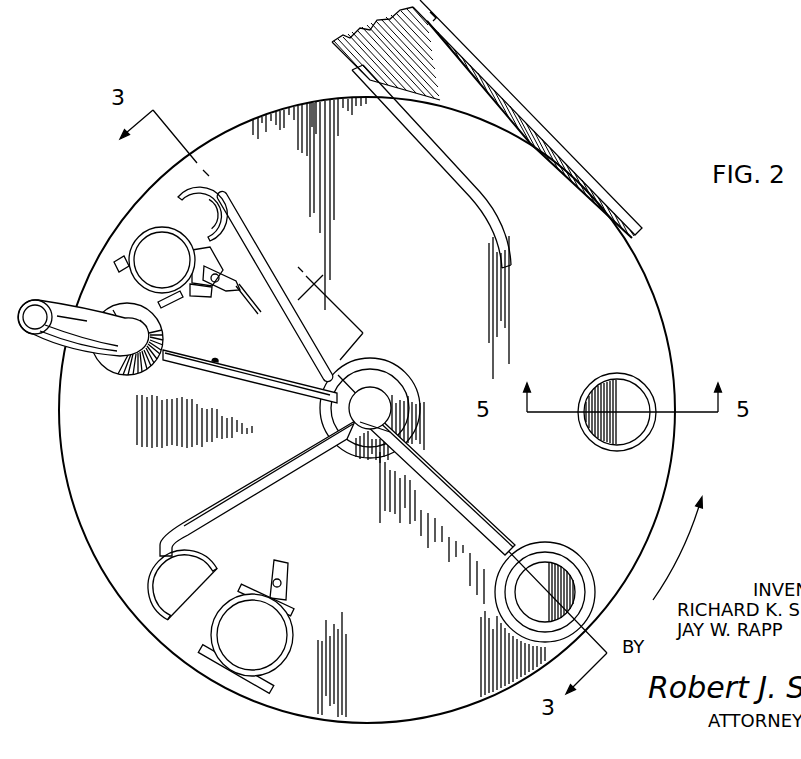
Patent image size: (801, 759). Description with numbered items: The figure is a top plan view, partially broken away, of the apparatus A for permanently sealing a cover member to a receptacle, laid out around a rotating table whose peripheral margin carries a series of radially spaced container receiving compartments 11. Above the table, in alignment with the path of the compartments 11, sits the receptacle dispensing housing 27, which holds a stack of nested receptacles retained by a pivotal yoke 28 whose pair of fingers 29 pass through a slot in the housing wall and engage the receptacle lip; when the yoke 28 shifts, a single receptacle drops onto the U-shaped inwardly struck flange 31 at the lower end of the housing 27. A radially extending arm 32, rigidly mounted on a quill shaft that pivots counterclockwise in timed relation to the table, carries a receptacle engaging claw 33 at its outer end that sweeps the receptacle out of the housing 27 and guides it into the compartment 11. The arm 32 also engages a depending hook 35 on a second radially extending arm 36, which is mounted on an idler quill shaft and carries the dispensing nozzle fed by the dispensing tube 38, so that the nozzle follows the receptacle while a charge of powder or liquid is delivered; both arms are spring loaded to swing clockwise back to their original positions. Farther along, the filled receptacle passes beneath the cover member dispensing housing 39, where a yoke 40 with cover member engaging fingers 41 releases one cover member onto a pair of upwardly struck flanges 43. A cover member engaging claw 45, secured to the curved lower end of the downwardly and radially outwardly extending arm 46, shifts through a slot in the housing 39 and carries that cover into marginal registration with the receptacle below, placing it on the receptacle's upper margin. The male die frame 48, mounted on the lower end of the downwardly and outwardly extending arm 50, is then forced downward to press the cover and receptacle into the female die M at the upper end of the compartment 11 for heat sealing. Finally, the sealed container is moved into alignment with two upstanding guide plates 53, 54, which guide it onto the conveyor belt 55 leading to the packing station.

The container receiving compartment 11 is at (600, 377).
The receptacle dispensing housing 27 is at (143, 240).
The pivotal yoke 28 is at (237, 293).
The fingers 29 is at (187, 253).
The inwardly struck flange 31 is at (117, 263).
The radially extending arm 32 is at (315, 282).
The receptacle engaging claw 33 is at (210, 197).
The depending hook 35 is at (217, 359).
The radially extending arm 36 is at (253, 385).
The dispensing tube 38 is at (67, 310).
The cover member dispensing housing 39 is at (293, 637).
The yoke 40 is at (287, 570).
The cover member engaging fingers 41 is at (290, 597).
The upwardly struck flanges 43 is at (275, 682).
The cover member engaging claw 45 is at (152, 572).
The downwardly and radially outwardly extending arm 46 is at (270, 458).
The male die frame 48 is at (560, 580).
The downwardly and outwardly extending arm 50 is at (467, 497).
The upstanding guide plate 53 is at (425, 147).
The upstanding guide plate 54 is at (572, 153).
The conveyor belt 55 is at (358, 35).
The apparatus A is at (266, 70).
The female die M is at (647, 438).